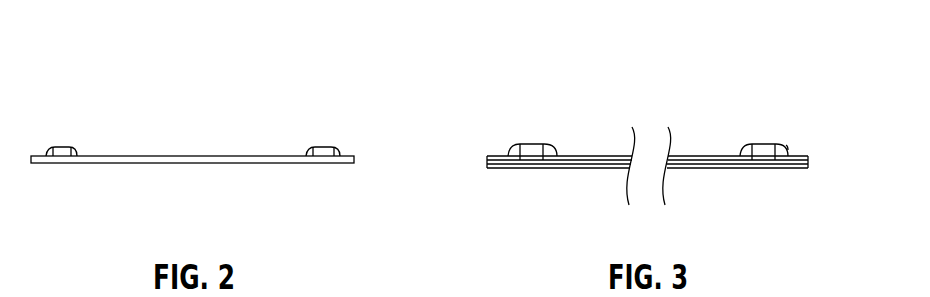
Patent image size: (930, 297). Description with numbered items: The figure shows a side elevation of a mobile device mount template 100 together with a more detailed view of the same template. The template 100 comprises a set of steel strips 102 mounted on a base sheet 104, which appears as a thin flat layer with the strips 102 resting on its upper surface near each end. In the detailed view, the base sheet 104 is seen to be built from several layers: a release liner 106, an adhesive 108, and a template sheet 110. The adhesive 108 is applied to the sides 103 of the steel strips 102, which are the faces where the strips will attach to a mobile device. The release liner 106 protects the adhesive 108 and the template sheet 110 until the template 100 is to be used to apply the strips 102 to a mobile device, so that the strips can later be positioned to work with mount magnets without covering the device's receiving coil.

In FIG. 2, the mobile device mount template 100 is at (340, 121).
In FIG. 3, the mobile device mount template 100 is at (794, 61).
In FIG. 2, the steel strips 102 is at (63, 146).
In FIG. 3, the steel strips 102 is at (533, 144).
In FIG. 3, the sides of steel strips 103 is at (532, 168).
In FIG. 2, the base sheet 104 is at (137, 167).
In FIG. 3, the base sheet 104 is at (481, 166).
In FIG. 3, the release liner 106 is at (808, 165).
In FIG. 3, the adhesive 108 is at (781, 152).
In FIG. 3, the template sheet 110 is at (805, 157).